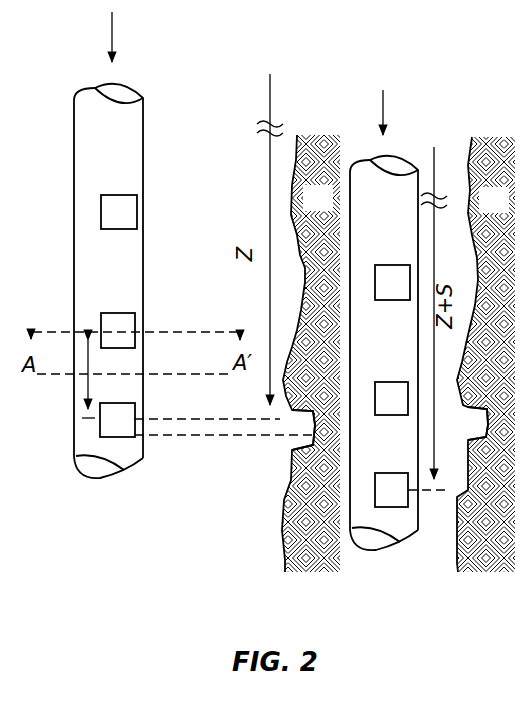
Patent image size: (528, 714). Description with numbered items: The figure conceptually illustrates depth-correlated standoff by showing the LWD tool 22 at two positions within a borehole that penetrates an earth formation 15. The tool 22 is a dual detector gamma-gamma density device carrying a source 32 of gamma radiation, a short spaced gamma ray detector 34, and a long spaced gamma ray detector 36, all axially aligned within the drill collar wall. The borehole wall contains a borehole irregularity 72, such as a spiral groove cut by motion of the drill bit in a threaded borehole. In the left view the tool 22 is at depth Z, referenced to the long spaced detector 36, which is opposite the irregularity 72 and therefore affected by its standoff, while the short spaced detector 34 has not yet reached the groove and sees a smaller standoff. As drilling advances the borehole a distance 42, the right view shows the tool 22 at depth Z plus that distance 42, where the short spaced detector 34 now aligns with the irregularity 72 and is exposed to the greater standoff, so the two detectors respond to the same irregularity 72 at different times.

The earth formation 15 is at (398, 353).
The logging-while-drilling (LWD) tool 22 is at (85, 445).
The source of gamma radiation 32 is at (132, 205).
The short spaced gamma ray detector 34 is at (135, 323).
The long spaced gamma ray detector 36 is at (135, 410).
The distance 42 is at (85, 400).
The borehole irregularity 72 is at (313, 432).